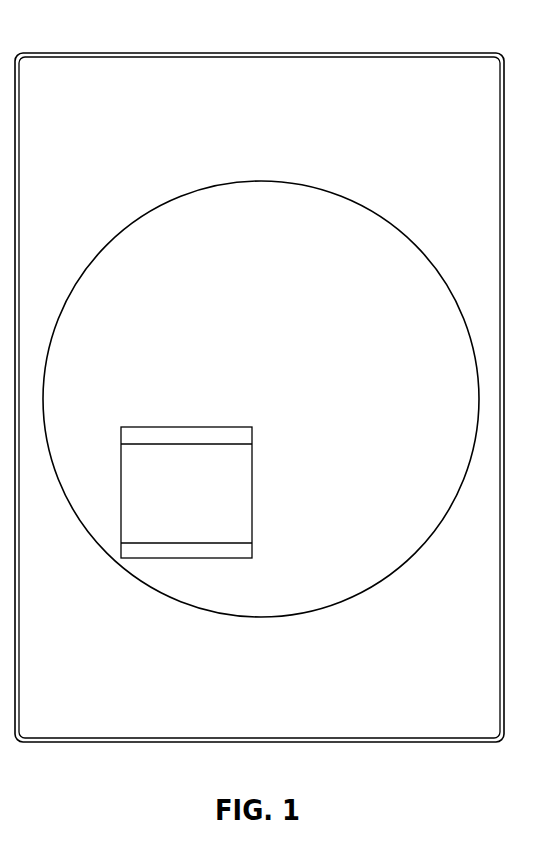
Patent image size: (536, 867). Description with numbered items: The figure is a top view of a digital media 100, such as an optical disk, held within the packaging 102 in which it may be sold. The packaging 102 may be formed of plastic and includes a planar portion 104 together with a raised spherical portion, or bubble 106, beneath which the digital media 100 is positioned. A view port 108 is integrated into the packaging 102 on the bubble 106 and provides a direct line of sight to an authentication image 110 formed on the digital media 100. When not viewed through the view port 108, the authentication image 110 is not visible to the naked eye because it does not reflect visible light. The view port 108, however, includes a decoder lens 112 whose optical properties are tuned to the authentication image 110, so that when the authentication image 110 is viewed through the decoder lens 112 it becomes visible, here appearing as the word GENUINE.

The digital media 100 is at (259, 382).
The packaging 102 is at (432, 53).
The planar portion 104 is at (412, 115).
The bubble 106 is at (297, 181).
The view port 108 is at (252, 437).
The authentication image 110 is at (192, 504).
The decoder lens 112 is at (221, 491).